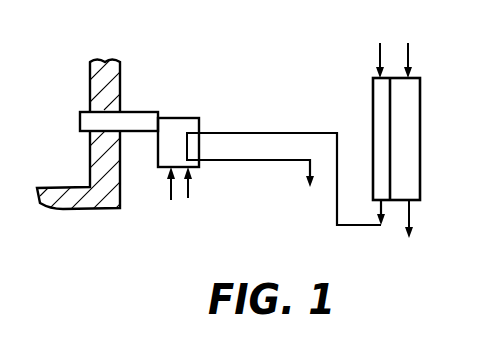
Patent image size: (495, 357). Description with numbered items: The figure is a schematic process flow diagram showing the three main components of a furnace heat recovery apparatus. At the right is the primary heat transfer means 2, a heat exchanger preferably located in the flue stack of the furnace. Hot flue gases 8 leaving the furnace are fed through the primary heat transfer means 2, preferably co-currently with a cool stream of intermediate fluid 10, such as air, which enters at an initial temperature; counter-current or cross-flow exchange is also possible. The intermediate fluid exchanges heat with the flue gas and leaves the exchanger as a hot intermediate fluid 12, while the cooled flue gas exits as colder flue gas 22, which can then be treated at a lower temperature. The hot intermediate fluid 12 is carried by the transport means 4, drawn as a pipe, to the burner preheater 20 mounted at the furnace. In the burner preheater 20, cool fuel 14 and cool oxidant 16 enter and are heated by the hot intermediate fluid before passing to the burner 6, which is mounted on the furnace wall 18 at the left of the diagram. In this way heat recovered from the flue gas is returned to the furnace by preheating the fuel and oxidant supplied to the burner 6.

The primary heat transfer means 2 is at (421, 97).
The transport means 4 is at (267, 131).
The burner 6 is at (152, 111).
The hot flue gases 8 is at (410, 58).
The cool stream of intermediate fluid 10 is at (377, 53).
The hot intermediate fluid 12 is at (360, 227).
The cool fuel 14 is at (167, 185).
The cool oxidant 16 is at (191, 185).
The furnace wall 18 is at (121, 78).
The burner preheater 20 is at (195, 117).
The colder flue gas 22 is at (411, 213).